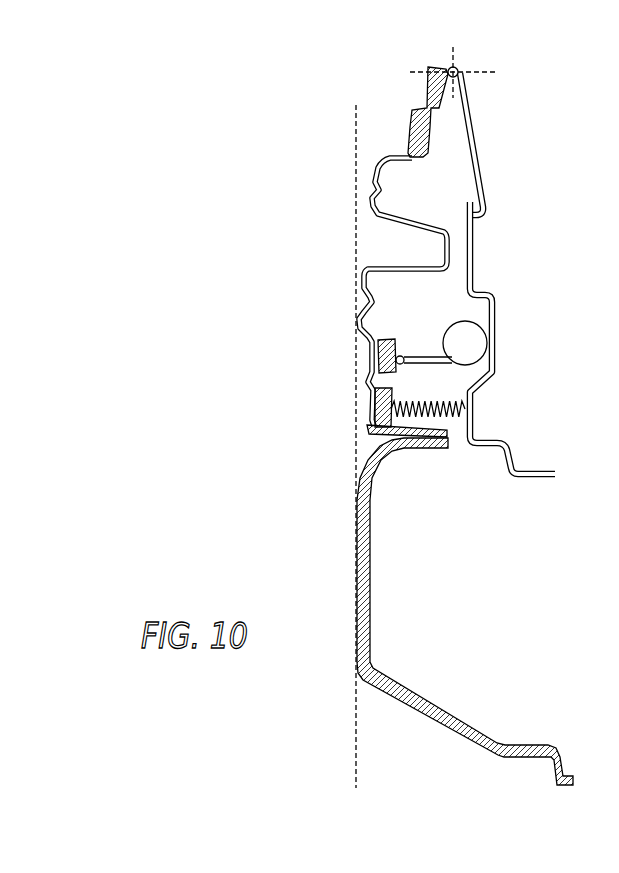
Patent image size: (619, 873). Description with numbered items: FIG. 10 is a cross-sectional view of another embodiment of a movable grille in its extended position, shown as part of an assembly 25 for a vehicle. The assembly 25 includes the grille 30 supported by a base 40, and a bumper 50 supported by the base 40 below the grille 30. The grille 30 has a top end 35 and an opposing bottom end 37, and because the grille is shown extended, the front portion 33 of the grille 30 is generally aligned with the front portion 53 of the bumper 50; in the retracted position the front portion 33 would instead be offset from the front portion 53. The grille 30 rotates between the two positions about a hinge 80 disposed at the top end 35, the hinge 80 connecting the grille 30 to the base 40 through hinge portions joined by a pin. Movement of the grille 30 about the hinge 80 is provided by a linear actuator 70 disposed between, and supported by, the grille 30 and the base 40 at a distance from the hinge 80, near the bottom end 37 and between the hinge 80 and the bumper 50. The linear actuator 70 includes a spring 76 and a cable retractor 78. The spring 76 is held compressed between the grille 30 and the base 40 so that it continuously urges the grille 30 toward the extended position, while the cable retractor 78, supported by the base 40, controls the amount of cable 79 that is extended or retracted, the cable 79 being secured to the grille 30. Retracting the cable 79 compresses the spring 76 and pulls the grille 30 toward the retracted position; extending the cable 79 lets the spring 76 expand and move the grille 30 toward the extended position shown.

The assembly 25 is at (566, 87).
The grille 30 is at (383, 160).
The front portion of the grille 33 is at (357, 325).
The top end 35 is at (426, 90).
The bottom end 37 is at (360, 423).
The base 40 is at (479, 156).
The bumper 50 is at (448, 723).
The front portion of the bumper 53 is at (359, 572).
The linear actuator 70 is at (467, 410).
The spring 76 is at (424, 414).
The cable retractor 78 is at (470, 333).
The cable 79 is at (423, 359).
The hinge 80 is at (458, 66).